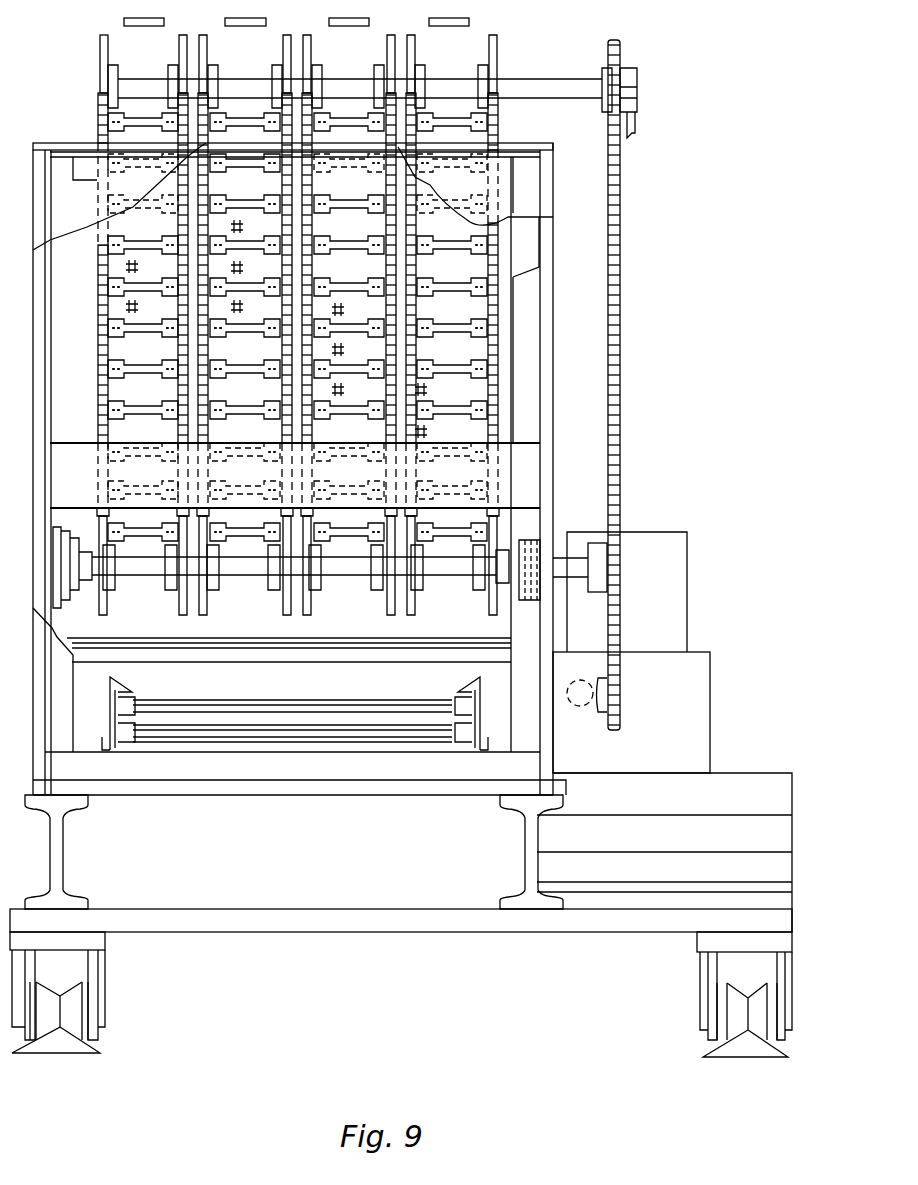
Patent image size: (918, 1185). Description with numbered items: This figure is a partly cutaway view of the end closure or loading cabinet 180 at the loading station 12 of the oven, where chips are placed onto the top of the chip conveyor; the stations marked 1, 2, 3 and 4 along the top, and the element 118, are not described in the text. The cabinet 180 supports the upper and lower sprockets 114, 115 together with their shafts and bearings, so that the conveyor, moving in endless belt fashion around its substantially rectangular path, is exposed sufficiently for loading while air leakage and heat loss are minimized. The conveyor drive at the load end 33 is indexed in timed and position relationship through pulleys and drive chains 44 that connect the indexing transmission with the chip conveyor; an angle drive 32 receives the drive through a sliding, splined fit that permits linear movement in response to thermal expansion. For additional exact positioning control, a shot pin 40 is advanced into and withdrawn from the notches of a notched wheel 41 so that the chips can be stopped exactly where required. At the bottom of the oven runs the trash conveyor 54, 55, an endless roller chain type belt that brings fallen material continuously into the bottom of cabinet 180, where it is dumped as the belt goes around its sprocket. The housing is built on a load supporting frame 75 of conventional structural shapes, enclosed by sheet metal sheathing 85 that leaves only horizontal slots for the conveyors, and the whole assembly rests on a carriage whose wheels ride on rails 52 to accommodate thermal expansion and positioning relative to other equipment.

The loading station 12 is at (100, 30).
The first station 1 is at (144, 13).
The second station 2 is at (245, 13).
The third station 3 is at (349, 13).
The fourth station 4 is at (449, 13).
The sprocket 115 is at (497, 50).
The load end 33 is at (625, 45).
The notched wheel 41 is at (637, 105).
The shot pin 40 is at (637, 132).
The loading cabinet 180 is at (551, 217).
The pulleys and drive chains 44 is at (628, 300).
The drive sprocket 118 is at (597, 552).
The angle drive 32 is at (692, 650).
The sheathing 85 is at (172, 638).
The sprocket 114 is at (358, 618).
The trash conveyor 54 is at (295, 710).
The trash conveyor 55 is at (292, 733).
The load supporting frame 75 is at (378, 936).
The rails 52 is at (80, 1053).